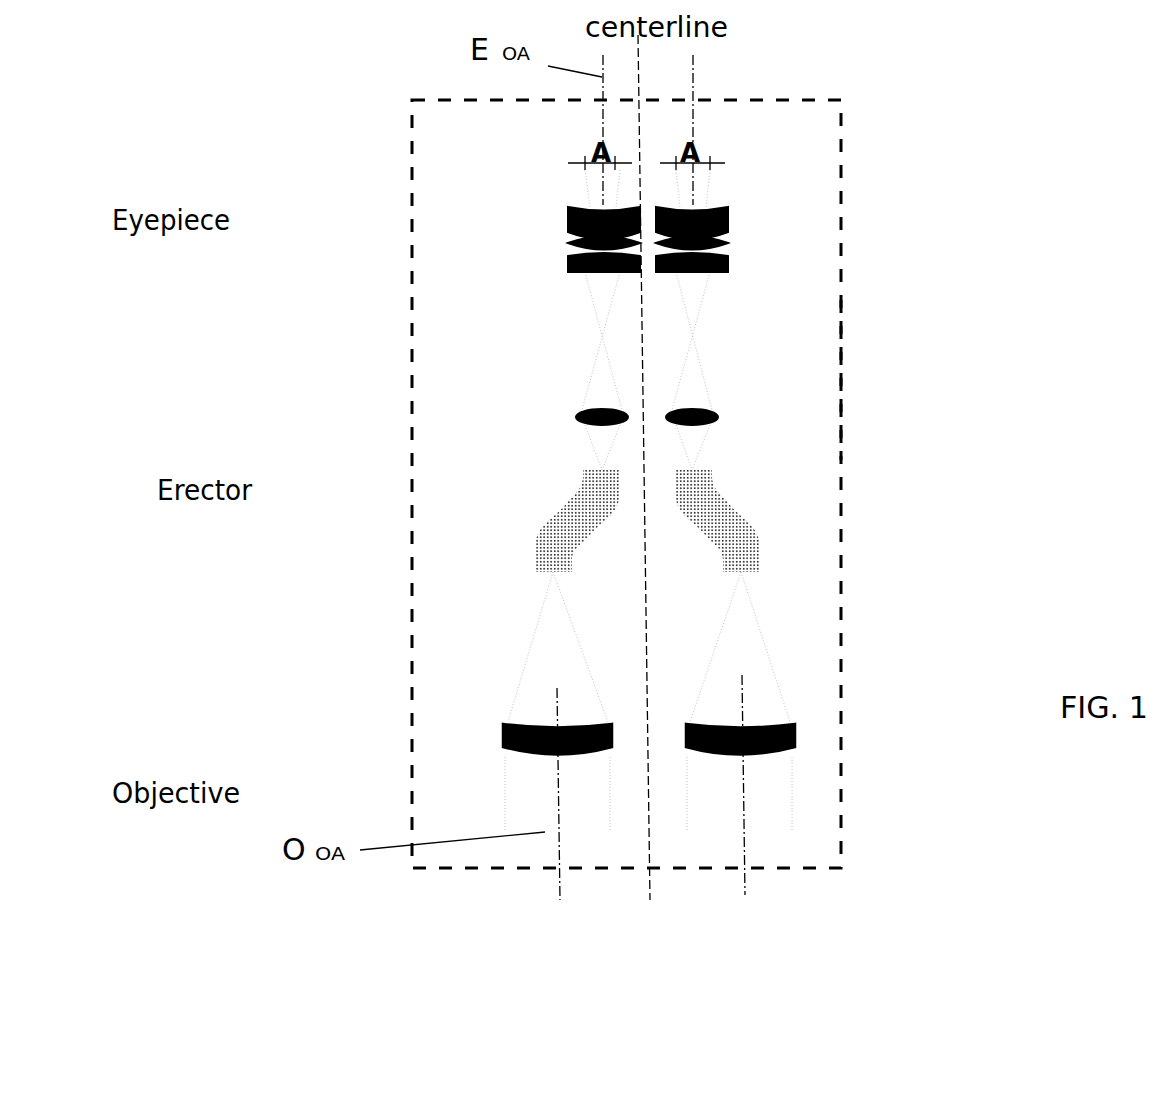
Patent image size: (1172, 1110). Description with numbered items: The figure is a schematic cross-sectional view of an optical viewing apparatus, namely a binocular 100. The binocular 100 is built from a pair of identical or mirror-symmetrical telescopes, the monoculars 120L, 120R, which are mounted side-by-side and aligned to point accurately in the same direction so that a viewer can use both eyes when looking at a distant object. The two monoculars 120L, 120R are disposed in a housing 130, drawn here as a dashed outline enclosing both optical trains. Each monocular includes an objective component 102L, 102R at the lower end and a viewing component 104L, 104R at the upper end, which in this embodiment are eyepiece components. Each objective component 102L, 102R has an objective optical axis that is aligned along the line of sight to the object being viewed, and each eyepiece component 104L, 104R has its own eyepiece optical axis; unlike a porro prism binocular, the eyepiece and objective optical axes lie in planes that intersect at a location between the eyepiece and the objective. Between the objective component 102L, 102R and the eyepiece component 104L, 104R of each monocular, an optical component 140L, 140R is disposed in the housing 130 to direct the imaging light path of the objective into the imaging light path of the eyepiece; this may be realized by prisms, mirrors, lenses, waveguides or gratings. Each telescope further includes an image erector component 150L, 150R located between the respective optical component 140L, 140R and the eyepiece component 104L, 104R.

The binocular 100 is at (852, 120).
The objective component 102L is at (493, 734).
The objective component 102R is at (806, 755).
The viewing component 104L is at (560, 225).
The viewing component 104R is at (748, 236).
The monocular 120L is at (468, 518).
The monocular 120R is at (808, 530).
The housing 130 is at (842, 383).
The optical component 140L is at (528, 540).
The optical component 140R is at (750, 496).
The image erector component 150L is at (556, 419).
The image erector component 150R is at (722, 418).